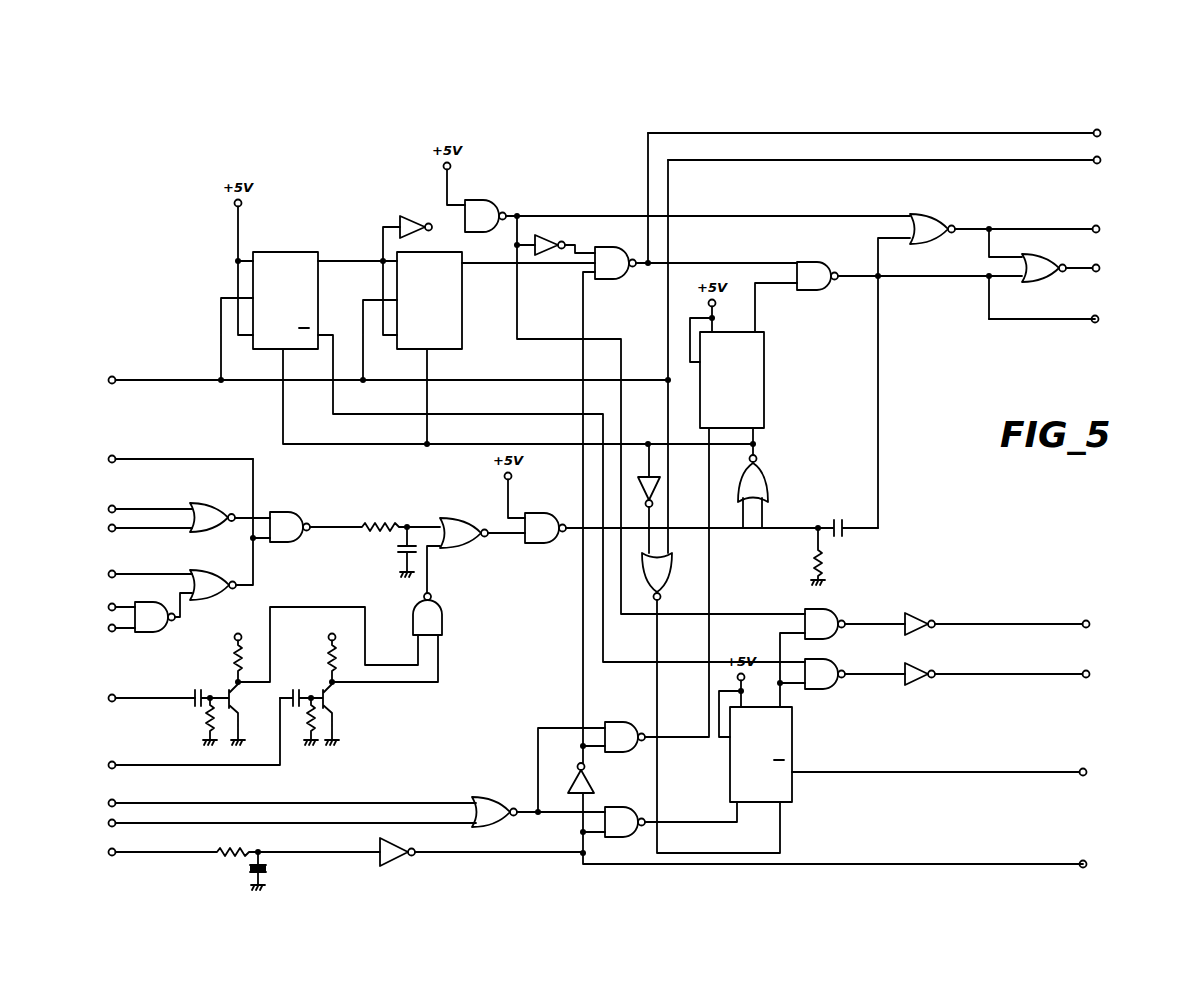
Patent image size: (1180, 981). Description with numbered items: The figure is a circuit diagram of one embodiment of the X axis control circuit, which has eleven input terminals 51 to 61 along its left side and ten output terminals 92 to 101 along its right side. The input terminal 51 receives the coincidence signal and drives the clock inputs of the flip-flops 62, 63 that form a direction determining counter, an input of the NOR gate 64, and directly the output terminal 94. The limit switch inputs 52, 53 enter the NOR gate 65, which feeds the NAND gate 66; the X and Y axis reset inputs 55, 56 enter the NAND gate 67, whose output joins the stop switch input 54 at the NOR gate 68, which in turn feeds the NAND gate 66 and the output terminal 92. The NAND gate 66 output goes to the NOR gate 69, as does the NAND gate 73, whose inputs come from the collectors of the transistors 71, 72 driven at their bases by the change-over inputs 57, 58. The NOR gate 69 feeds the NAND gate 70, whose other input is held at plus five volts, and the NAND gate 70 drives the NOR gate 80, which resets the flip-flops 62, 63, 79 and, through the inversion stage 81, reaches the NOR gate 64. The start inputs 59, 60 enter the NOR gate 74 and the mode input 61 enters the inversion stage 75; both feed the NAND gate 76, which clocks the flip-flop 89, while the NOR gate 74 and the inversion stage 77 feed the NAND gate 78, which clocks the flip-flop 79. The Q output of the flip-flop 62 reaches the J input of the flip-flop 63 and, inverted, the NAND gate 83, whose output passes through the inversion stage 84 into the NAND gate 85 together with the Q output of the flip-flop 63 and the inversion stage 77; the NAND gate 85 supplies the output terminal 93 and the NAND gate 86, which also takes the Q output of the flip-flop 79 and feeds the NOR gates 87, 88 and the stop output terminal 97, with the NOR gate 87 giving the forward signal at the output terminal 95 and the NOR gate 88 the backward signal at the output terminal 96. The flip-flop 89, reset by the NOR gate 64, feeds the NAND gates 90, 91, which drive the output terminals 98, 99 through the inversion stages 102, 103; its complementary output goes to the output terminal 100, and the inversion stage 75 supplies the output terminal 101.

The input terminal 51 is at (113, 376).
The input terminal 52 is at (113, 505).
The input terminal 53 is at (113, 532).
The input terminal 54 is at (110, 571).
The input terminal 55 is at (110, 604).
The input terminal 56 is at (110, 631).
The input terminal 57 is at (111, 695).
The input terminal 58 is at (111, 762).
The input terminal 59 is at (110, 800).
The input terminal 60 is at (110, 826).
The input terminal 61 is at (111, 856).
The flip-flop 62 is at (294, 258).
The flip-flop 63 is at (455, 322).
The NOR gate 64 is at (664, 572).
The NOR gate 65 is at (212, 505).
The NAND gate 66 is at (290, 514).
The NAND gate 67 is at (160, 633).
The NOR gate 68 is at (203, 590).
The NOR gate 69 is at (462, 524).
The NAND gate 70 is at (540, 510).
The transistor 71 is at (240, 697).
The transistor 72 is at (334, 697).
The NAND gate 73 is at (438, 622).
The NOR gate 74 is at (490, 797).
The inversion stage 75 is at (396, 860).
The NAND gate 76 is at (625, 835).
The inversion stage 77 is at (590, 779).
The NAND gate 78 is at (616, 725).
The flip-flop 79 is at (756, 374).
The NOR gate 80 is at (767, 481).
The inversion stage 81 is at (658, 497).
The NAND gate 83 is at (486, 204).
The inversion stage 84 is at (411, 216).
The NAND gate 85 is at (611, 250).
The NAND gate 86 is at (810, 264).
The NOR gate 87 is at (932, 222).
The NOR gate 88 is at (1036, 258).
The flip-flop 89 is at (788, 783).
The NAND gate 90 is at (818, 612).
The NAND gate 91 is at (826, 690).
The output terminal 92 is at (113, 455).
The output terminal 93 is at (1100, 130).
The output terminal 94 is at (1100, 163).
The output terminal 95 is at (1099, 226).
The output terminal 96 is at (1099, 265).
The output terminal 97 is at (1098, 316).
The output terminal 98 is at (1089, 621).
The output terminal 99 is at (1089, 671).
The output terminal 100 is at (1086, 769).
The output terminal 101 is at (1083, 860).
The inversion stage 102 is at (918, 618).
The inversion stage 103 is at (918, 680).